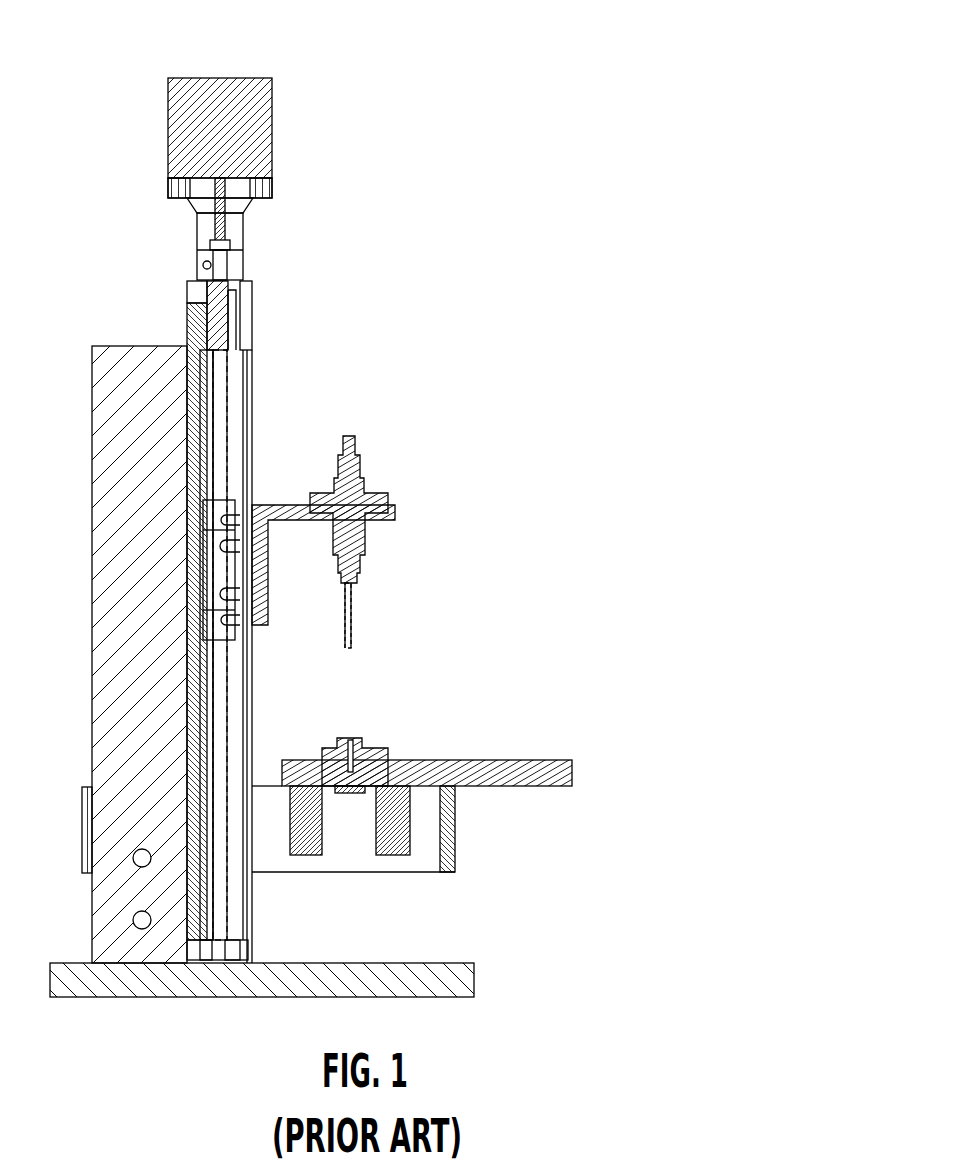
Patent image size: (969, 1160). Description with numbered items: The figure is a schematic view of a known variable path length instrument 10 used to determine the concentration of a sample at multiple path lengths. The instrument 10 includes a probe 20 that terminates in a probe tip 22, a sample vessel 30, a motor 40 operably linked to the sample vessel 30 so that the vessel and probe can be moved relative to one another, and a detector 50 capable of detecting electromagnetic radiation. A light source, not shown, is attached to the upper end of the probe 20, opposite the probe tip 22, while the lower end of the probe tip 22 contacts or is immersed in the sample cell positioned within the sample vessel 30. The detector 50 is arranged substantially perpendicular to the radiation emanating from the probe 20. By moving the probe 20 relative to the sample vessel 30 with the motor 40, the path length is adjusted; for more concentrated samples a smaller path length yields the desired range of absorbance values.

The variable path length instrument 10 is at (612, 44).
The probe 20 is at (362, 540).
The probe tip 22 is at (352, 630).
The sample vessel 30 is at (352, 745).
The motor 40 is at (255, 150).
The detector 50 is at (356, 795).